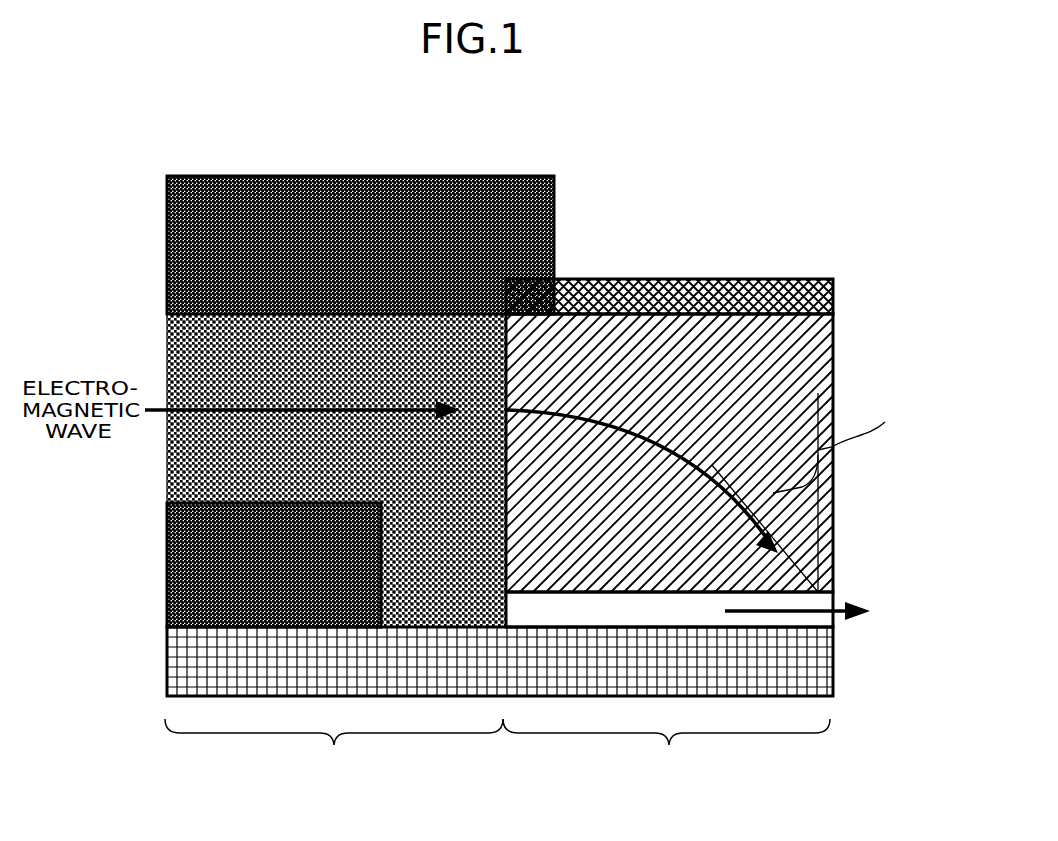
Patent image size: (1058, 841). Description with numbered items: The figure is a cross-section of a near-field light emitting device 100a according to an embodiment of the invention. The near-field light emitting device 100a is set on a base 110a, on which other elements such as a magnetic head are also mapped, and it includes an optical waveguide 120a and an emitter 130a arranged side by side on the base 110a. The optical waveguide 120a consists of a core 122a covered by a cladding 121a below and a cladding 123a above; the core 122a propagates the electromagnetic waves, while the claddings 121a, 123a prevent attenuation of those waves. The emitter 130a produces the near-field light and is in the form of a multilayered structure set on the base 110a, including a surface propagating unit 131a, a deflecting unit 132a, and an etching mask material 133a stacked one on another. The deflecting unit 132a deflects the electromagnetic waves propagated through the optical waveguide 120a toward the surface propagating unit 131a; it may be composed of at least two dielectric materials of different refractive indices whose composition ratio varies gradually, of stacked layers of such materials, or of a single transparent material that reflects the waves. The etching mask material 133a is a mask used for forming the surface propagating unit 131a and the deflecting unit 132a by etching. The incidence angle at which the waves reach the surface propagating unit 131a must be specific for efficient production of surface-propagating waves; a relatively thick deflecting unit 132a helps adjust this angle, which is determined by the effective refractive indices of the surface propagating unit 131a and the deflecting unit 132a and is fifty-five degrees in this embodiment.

The near-field light emitting device 100a is at (742, 178).
The base 110a is at (822, 663).
The optical waveguide 120a is at (334, 749).
The cladding 121a is at (178, 560).
The core 122a is at (180, 477).
The cladding 123a is at (178, 268).
The emitter 130a is at (666, 749).
The surface propagating unit 131a is at (822, 600).
The deflecting unit 132a is at (822, 510).
The etching mask material 133a is at (833, 296).